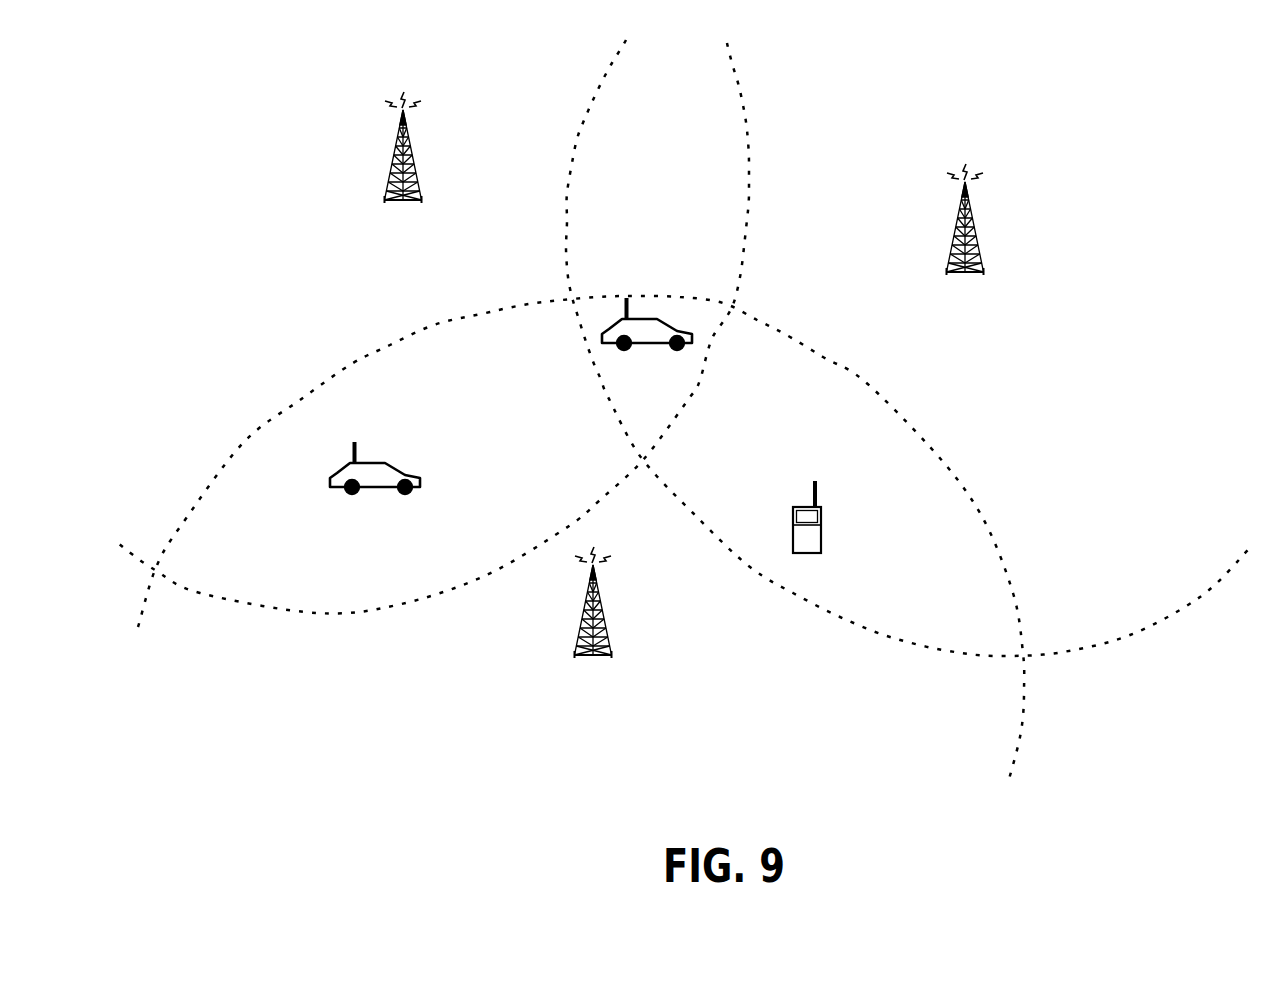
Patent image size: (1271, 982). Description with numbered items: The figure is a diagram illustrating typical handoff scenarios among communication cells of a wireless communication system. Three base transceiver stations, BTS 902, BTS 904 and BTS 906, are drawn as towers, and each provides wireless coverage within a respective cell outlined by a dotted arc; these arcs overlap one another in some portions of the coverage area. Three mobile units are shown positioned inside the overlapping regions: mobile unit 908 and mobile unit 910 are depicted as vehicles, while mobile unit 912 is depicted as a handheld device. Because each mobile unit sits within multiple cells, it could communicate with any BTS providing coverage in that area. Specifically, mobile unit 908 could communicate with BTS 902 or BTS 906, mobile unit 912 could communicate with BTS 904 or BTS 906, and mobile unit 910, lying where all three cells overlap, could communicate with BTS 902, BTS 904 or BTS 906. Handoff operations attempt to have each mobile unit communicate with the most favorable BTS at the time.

The BTS 902 is at (399, 173).
The BTS 904 is at (967, 274).
The BTS 906 is at (595, 657).
The mobile unit 908 is at (385, 489).
The mobile unit 910 is at (657, 345).
The mobile unit 912 is at (822, 514).